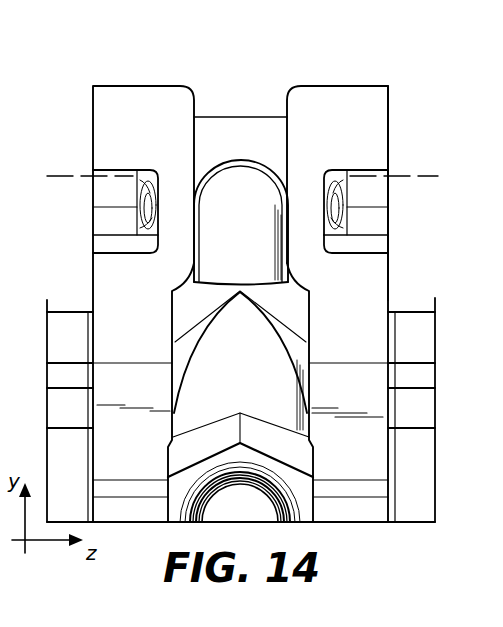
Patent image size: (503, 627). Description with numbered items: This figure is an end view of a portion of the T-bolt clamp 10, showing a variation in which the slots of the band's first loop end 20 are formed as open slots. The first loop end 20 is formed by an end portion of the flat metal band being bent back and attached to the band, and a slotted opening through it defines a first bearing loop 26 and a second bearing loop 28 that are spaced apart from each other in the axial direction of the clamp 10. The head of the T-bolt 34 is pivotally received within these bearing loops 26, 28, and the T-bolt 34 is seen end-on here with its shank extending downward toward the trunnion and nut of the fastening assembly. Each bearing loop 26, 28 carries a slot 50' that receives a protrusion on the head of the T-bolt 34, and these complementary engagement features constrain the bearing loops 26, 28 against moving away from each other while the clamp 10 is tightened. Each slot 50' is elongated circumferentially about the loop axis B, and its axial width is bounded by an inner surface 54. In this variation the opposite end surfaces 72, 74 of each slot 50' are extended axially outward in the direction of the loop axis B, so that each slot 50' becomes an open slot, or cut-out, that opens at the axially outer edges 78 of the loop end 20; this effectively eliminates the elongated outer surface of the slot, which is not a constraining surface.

The T-bolt clamp 10 is at (70, 96).
The first loop end 20 is at (168, 92).
The first bearing loop 26 is at (127, 88).
The second bearing loop 28 is at (350, 88).
The T-bolt 34 is at (247, 122).
The open slot 50' is at (98, 211).
The inner surface 54 is at (332, 197).
The end surface 72 is at (365, 170).
The end surface 74 is at (363, 245).
The axially outer edge 78 is at (389, 107).
The loop axis B is at (416, 176).